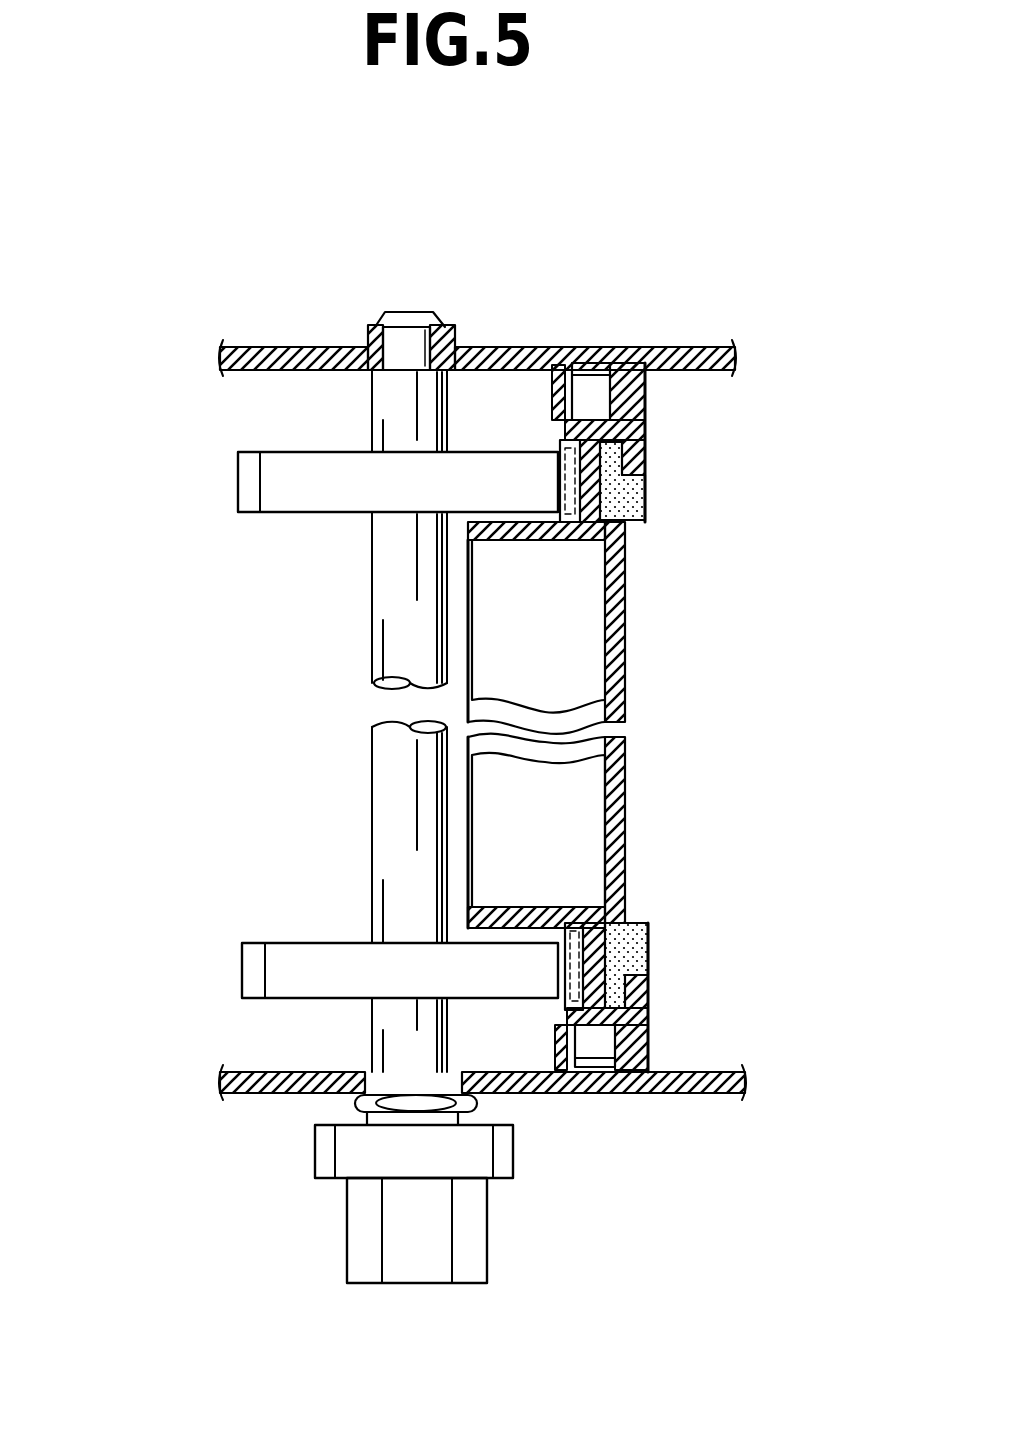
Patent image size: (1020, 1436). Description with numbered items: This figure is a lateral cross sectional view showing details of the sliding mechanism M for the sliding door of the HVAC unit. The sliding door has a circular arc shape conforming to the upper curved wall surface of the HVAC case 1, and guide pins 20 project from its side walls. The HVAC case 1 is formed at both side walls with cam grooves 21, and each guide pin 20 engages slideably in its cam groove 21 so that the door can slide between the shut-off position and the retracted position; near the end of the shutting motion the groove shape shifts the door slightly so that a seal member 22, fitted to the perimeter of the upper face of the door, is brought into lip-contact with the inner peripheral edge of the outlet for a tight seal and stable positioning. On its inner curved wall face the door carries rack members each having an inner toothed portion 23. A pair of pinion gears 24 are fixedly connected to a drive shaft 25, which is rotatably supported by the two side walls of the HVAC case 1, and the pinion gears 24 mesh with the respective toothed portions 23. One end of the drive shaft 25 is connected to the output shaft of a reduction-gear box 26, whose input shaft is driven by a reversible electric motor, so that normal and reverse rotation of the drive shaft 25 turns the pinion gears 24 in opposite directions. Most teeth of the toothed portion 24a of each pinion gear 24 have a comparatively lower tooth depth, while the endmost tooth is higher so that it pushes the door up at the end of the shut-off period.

The HVAC case 1 is at (280, 338).
The guide pin 20 is at (588, 395).
The cam groove 21 is at (606, 400).
The seal member 22 is at (648, 495).
The toothed portion 23 is at (565, 472).
The pinion gear 24 is at (336, 724).
The toothed portion of the pinion 24a is at (238, 478).
The drive shaft 25 is at (372, 765).
The reduction-gear box 26 is at (315, 1158).
The sliding mechanism M is at (252, 543).